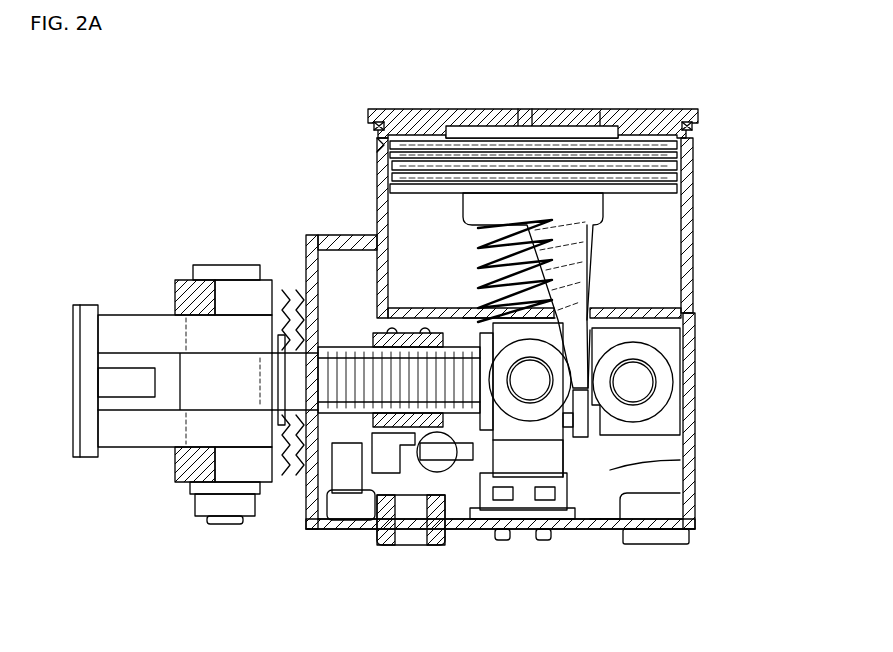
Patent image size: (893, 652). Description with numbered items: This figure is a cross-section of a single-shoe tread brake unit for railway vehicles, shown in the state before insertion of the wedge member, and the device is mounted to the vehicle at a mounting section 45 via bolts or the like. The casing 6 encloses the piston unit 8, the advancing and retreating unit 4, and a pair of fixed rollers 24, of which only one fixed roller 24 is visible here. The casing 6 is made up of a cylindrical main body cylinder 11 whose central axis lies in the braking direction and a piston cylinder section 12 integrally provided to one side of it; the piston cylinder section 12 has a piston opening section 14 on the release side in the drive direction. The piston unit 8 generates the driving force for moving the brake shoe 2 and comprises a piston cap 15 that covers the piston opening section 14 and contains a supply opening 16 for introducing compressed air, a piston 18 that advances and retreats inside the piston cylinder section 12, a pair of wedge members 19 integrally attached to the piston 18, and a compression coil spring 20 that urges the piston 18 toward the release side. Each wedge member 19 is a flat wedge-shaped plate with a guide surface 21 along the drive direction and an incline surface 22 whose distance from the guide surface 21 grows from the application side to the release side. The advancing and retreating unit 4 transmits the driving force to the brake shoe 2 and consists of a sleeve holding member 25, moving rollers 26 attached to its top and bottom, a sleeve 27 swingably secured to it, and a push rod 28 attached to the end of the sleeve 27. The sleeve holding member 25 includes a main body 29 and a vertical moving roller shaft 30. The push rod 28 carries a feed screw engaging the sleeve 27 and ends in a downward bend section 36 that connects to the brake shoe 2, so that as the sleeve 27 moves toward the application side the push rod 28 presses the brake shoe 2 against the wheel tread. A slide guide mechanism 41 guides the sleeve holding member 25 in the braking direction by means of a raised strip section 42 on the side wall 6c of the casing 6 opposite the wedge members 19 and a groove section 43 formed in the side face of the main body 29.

The brake shoe 2 is at (143, 435).
The advancing and retreating unit 4 is at (352, 505).
The casing 6 is at (688, 232).
The side wall 6c is at (605, 527).
The piston unit 8 is at (378, 157).
The main body cylinder 11 is at (594, 525).
The piston cylinder section 12 is at (383, 185).
The piston opening section 14 is at (428, 128).
The piston cap 15 is at (603, 114).
The supply opening 16 is at (525, 114).
The piston 18 is at (428, 150).
The wedge member 19 is at (582, 270).
The compression coil spring 20 is at (475, 320).
The guide surface 21 is at (590, 297).
The incline surface 22 is at (500, 292).
The fixed roller 24 is at (668, 384).
The sleeve holding member 25 is at (517, 483).
The moving roller 26 is at (500, 420).
The sleeve 27 is at (405, 420).
The push rod 28 is at (330, 400).
The main body 29 is at (512, 405).
The moving roller shaft 30 is at (535, 395).
The bend section 36 is at (205, 372).
The slide guide mechanism 41 is at (580, 447).
The raised strip section 42 is at (520, 428).
The groove section 43 is at (617, 490).
The mounting section 45 is at (683, 536).